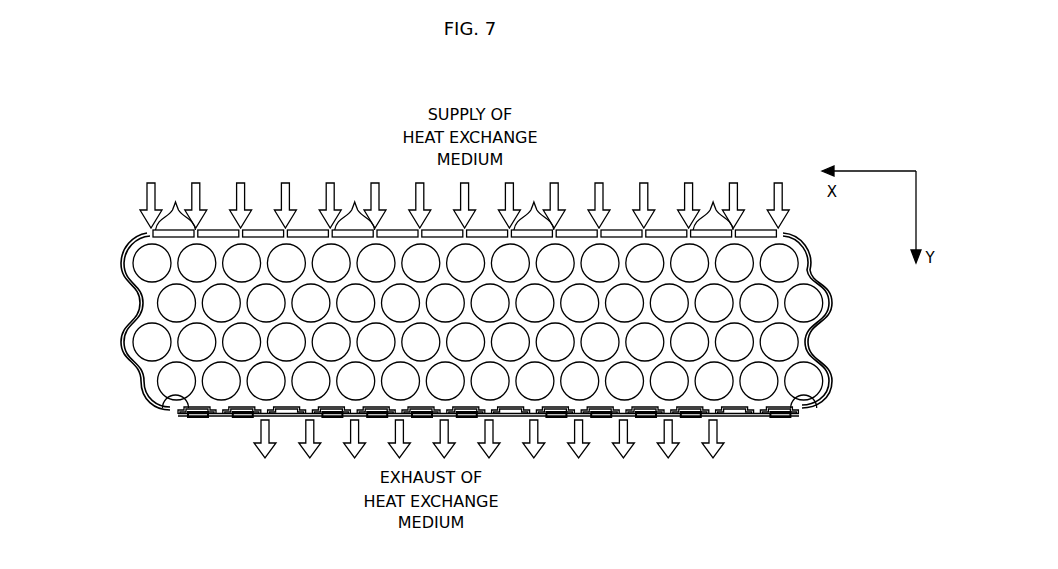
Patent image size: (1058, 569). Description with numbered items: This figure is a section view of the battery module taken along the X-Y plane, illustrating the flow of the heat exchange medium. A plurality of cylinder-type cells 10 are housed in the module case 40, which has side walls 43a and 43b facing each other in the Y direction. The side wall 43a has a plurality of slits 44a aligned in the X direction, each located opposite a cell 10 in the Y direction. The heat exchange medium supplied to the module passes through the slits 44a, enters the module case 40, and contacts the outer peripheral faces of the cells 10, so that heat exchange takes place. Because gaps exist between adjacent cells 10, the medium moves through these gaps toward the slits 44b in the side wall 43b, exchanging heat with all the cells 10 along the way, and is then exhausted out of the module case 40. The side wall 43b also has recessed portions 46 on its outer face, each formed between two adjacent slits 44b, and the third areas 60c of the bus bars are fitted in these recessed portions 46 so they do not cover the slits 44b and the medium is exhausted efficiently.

The cell 10 is at (478, 322).
The module case 40 is at (118, 246).
The side wall 43a is at (271, 229).
The side wall 43b is at (512, 414).
The slit 44a is at (445, 208).
The slit 44b is at (490, 434).
The recessed portion 46 is at (493, 406).
The third area 60c is at (489, 441).